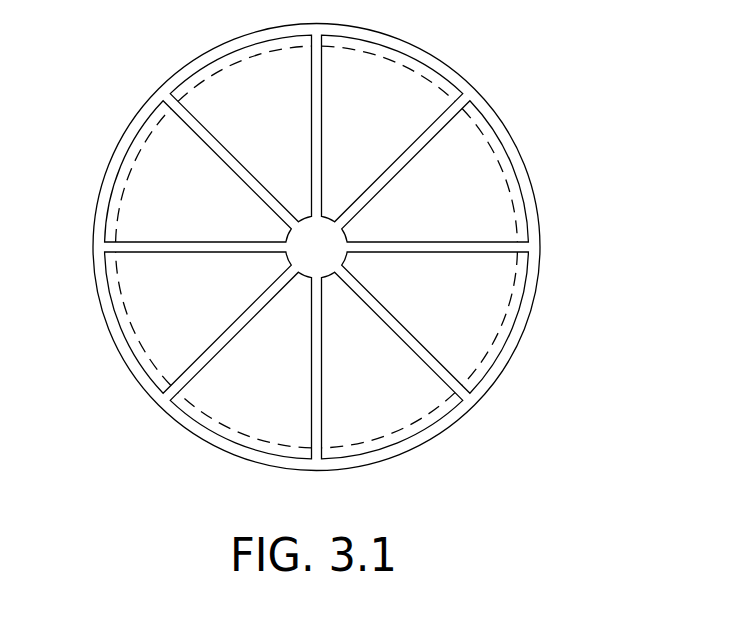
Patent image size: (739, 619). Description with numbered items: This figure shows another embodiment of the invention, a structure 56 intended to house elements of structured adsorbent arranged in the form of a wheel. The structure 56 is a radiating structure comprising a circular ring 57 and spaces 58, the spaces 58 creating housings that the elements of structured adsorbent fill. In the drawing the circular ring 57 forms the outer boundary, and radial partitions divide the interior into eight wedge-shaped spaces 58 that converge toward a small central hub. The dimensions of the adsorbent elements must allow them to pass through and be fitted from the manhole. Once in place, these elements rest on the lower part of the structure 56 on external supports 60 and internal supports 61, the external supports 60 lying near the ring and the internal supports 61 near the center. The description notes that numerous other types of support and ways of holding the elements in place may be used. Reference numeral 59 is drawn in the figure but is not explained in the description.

The structure 56 is at (527, 170).
The circular ring 57 is at (498, 122).
The spaces 58 is at (252, 92).
The radial partition 59 is at (293, 257).
The external supports 60 is at (417, 72).
The internal supports 61 is at (337, 257).